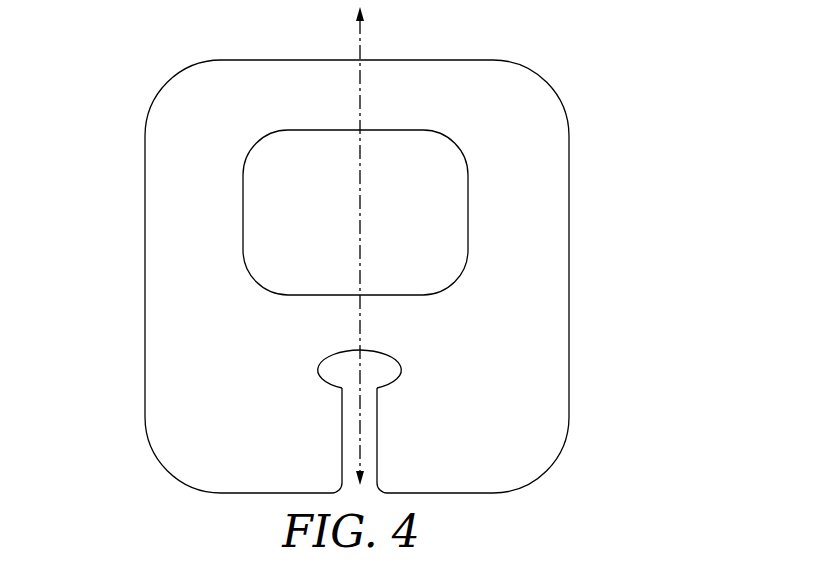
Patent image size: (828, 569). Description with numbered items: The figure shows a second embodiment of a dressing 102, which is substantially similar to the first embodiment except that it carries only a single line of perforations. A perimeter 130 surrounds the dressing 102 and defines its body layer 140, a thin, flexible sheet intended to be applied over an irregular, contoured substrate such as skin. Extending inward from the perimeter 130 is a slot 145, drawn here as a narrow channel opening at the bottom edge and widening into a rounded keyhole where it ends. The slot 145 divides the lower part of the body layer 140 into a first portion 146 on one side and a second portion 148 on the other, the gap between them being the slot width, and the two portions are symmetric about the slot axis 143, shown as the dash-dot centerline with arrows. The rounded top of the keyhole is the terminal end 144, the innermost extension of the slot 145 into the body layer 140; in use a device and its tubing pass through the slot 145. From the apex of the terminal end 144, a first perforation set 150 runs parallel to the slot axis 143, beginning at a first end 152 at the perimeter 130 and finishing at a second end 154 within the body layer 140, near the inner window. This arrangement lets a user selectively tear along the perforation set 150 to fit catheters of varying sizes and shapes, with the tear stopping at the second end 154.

The dressing 102 is at (374, 250).
The perimeter 130 is at (569, 362).
The body layer 140 is at (168, 303).
The slot axis 143 is at (359, 36).
The terminal end 144 is at (356, 350).
The slot 145 is at (358, 434).
The first portion 146 is at (281, 469).
The second portion 148 is at (481, 469).
The first perforation set 150 is at (358, 323).
The first end 152 is at (363, 349).
The second end 154 is at (361, 297).